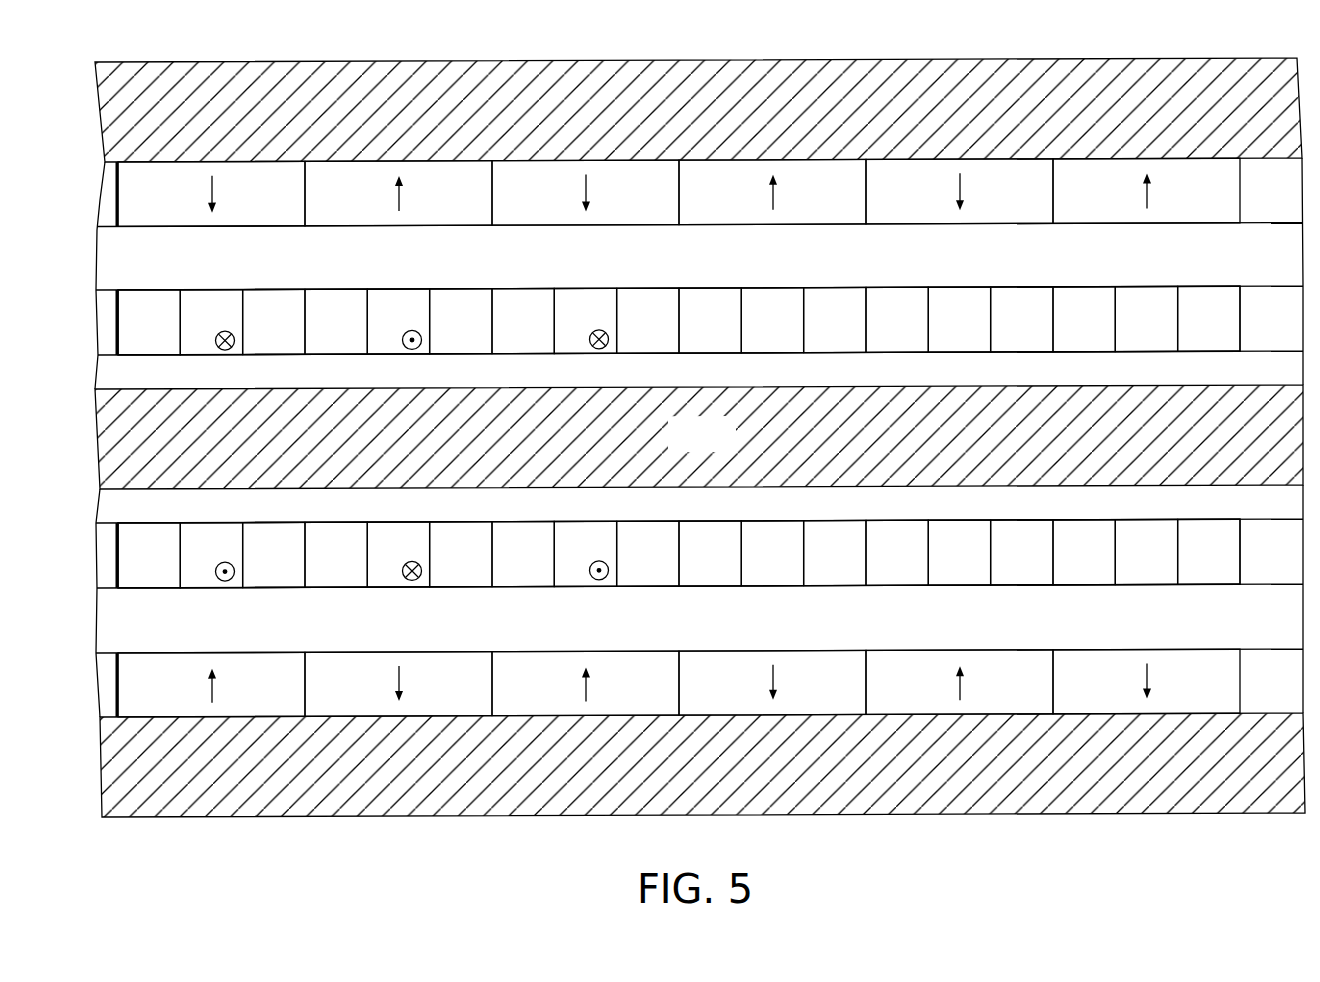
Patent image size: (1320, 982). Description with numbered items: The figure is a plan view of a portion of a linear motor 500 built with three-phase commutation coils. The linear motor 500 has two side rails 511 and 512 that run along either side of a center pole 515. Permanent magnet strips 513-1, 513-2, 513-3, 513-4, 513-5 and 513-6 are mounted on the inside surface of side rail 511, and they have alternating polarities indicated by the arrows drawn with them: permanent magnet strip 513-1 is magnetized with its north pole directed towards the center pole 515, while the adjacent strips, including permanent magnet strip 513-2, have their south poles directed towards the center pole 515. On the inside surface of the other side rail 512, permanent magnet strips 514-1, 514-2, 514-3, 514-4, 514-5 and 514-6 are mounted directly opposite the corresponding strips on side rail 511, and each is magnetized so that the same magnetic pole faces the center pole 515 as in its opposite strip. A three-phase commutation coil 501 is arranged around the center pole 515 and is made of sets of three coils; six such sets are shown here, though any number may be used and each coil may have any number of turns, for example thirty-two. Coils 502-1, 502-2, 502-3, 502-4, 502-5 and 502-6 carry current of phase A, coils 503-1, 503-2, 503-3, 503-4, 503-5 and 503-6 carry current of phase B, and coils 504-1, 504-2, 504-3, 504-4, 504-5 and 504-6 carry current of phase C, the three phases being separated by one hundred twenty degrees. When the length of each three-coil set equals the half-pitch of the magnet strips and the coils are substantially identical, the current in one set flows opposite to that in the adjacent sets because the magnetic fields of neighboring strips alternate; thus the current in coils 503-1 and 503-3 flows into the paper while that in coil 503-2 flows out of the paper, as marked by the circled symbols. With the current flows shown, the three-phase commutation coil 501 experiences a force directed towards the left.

The linear motor 500 is at (887, 842).
The three-phase commutation coil 501 is at (1237, 358).
The coil 502-1 is at (148, 290).
The coil 502-2 is at (341, 290).
The coil 502-3 is at (531, 290).
The coil 502-4 is at (718, 290).
The coil 502-5 is at (906, 290).
The coil 502-6 is at (1094, 290).
The coil 503-1 is at (210, 358).
The coil 503-2 is at (395, 358).
The coil 503-3 is at (585, 358).
The coil 503-4 is at (770, 358).
The coil 503-5 is at (956, 358).
The coil 503-6 is at (1141, 358).
The coil 504-1 is at (259, 290).
The coil 504-2 is at (449, 290).
The coil 504-3 is at (639, 290).
The coil 504-4 is at (826, 290).
The coil 504-5 is at (1014, 290).
The coil 504-6 is at (1203, 290).
The side rail 511 is at (590, 62).
The side rail 512 is at (590, 815).
The permanent magnet strip 513-1 is at (291, 196).
The permanent magnet strip 513-2 is at (478, 196).
The permanent magnet strip 513-3 is at (665, 196).
The permanent magnet strip 513-4 is at (852, 196).
The permanent magnet strip 513-5 is at (1039, 196).
The permanent magnet strip 513-6 is at (1226, 196).
The permanent magnet strip 514-1 is at (291, 684).
The permanent magnet strip 514-2 is at (478, 684).
The permanent magnet strip 514-3 is at (665, 684).
The permanent magnet strip 514-4 is at (852, 684).
The permanent magnet strip 514-5 is at (1039, 684).
The permanent magnet strip 514-6 is at (1226, 684).
The center pole 515 is at (722, 449).